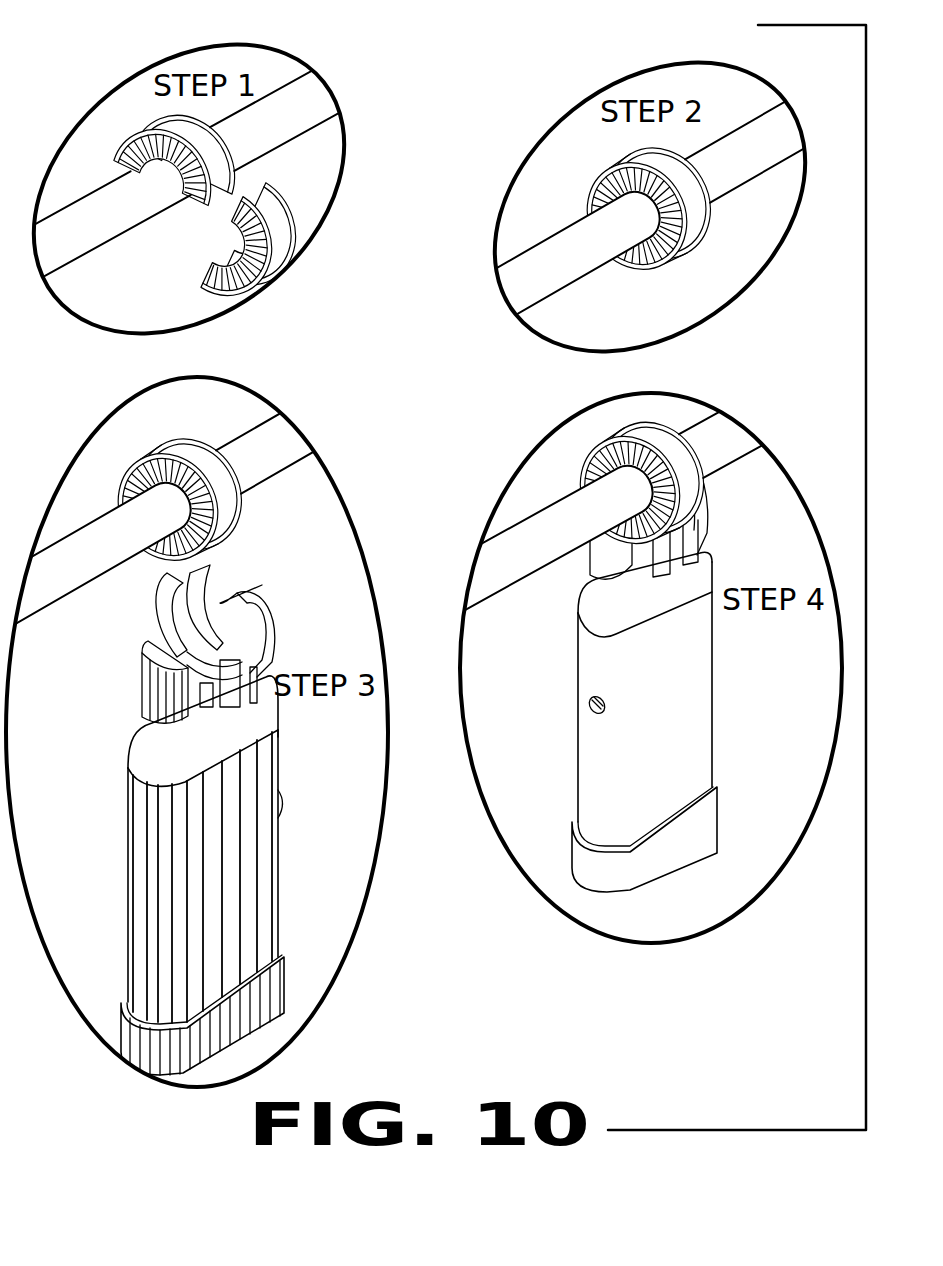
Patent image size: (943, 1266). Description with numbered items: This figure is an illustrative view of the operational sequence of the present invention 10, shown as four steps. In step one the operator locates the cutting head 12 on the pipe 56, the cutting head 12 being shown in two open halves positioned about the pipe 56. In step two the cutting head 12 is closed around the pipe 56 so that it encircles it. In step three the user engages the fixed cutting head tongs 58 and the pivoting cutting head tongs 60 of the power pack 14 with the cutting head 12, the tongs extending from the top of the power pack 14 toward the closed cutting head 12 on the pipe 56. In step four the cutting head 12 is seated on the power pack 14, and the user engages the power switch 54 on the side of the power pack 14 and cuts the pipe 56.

The present invention 10 is at (460, 480).
The cutting head 12 is at (131, 104).
The power pack 14 is at (106, 860).
The power switch 54 is at (592, 714).
The pipe 56 is at (98, 230).
The fixed cutting head tongs 58 is at (236, 592).
The pivoting cutting head tongs 60 is at (178, 583).